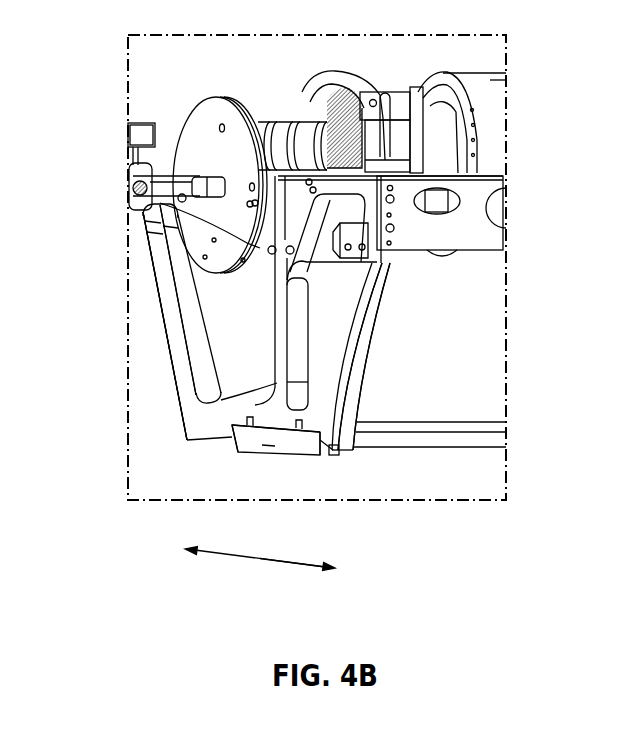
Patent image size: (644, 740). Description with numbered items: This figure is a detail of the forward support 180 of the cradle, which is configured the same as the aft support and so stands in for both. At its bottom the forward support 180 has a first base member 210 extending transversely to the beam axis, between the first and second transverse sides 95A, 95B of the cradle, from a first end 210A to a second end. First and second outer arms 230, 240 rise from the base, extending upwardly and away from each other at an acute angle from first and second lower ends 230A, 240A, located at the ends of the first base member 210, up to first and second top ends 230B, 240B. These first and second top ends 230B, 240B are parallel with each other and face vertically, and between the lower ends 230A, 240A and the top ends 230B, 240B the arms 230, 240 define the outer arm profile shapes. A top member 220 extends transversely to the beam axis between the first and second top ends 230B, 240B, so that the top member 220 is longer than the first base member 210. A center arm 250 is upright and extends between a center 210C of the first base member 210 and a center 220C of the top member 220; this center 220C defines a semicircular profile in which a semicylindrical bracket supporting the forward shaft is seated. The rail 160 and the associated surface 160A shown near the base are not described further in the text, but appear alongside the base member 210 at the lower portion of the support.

The rail 160 is at (457, 437).
The rail mounting surface 160A is at (240, 437).
The forward support 180 is at (150, 298).
The first base member 210 is at (178, 385).
The first end 210A is at (320, 432).
The center 210C is at (187, 440).
The top member 220 is at (130, 158).
The center 220C is at (130, 191).
The first outer arm 230 is at (352, 345).
The first lower end 230A is at (358, 374).
The first top end 230B is at (380, 262).
The second outer arm 240 is at (152, 283).
The second lower end 240A is at (166, 334).
The second top end 240B is at (146, 207).
The center arm 250 is at (283, 328).
The first transverse side 95A is at (326, 576).
The second transverse side 95B is at (231, 552).